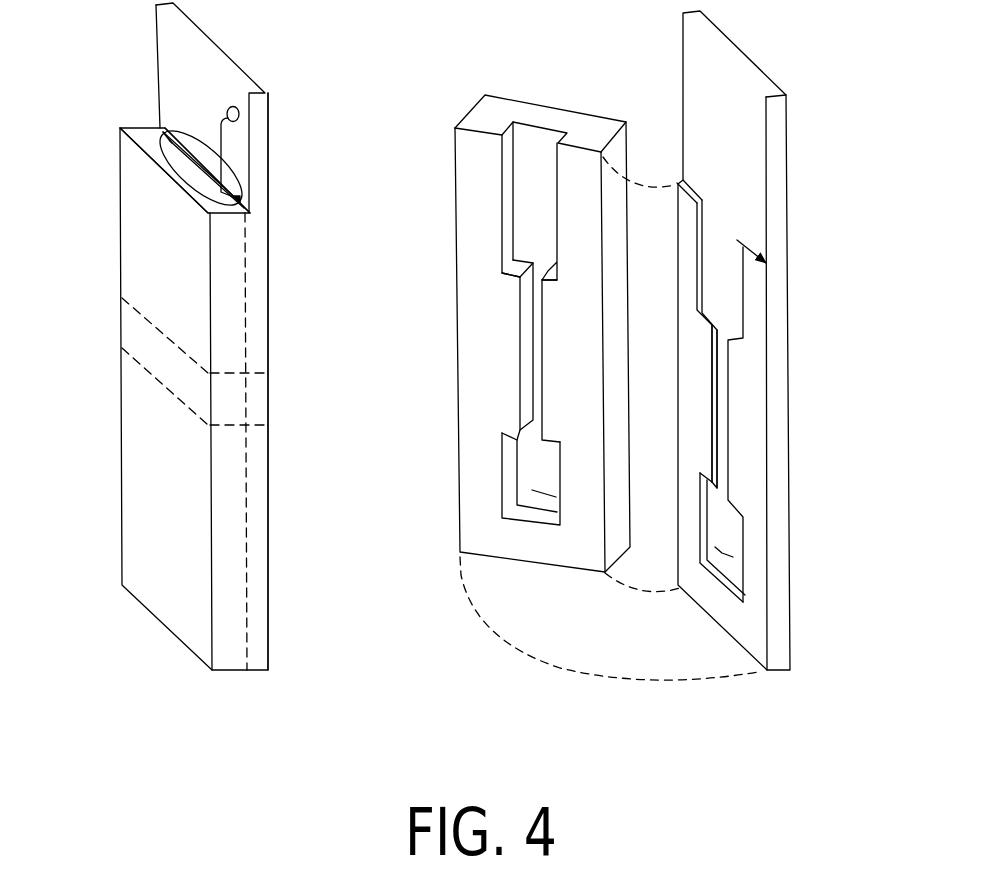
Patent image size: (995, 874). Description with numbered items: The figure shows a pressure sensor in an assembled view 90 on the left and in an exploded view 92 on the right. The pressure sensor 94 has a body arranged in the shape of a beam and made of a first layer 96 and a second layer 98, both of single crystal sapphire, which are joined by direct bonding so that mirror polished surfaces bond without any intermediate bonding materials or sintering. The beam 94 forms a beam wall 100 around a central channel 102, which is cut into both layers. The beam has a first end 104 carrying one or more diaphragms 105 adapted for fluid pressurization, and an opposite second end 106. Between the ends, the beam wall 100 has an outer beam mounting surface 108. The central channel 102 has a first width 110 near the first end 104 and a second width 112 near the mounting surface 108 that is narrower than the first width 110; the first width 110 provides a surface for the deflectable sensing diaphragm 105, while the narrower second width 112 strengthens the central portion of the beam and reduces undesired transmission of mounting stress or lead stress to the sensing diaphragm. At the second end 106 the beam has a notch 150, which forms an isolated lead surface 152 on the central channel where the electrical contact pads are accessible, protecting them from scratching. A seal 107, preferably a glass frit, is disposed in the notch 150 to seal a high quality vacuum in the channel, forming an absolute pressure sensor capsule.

The assembled view 90 is at (276, 289).
The exploded view 92 is at (452, 368).
The pressure sensor 94 is at (122, 338).
The first layer 96 is at (680, 47).
The second layer 98 is at (532, 103).
The beam wall 100 is at (480, 322).
The central channel 102 is at (535, 302).
The first end 104 is at (140, 527).
The diaphragm 105 is at (545, 495).
The second end 106 is at (152, 59).
The seal 107 is at (187, 168).
The outer beam mounting surface 108 is at (158, 362).
The first width 110 is at (618, 482).
The second width 112 is at (729, 443).
The notch 150 is at (155, 143).
The isolated lead surface 152 is at (203, 77).